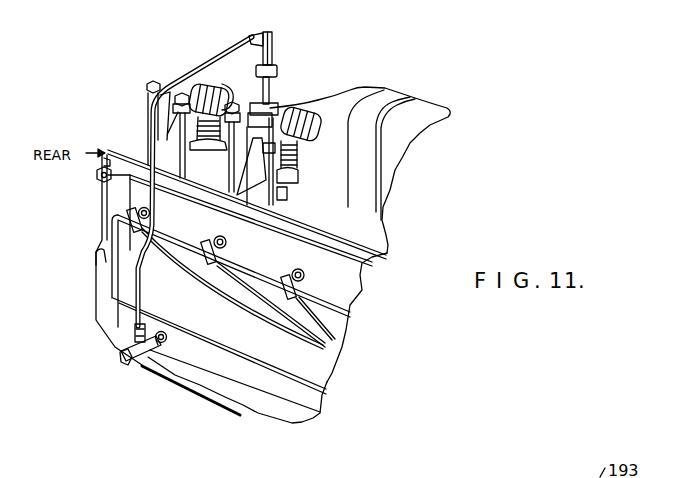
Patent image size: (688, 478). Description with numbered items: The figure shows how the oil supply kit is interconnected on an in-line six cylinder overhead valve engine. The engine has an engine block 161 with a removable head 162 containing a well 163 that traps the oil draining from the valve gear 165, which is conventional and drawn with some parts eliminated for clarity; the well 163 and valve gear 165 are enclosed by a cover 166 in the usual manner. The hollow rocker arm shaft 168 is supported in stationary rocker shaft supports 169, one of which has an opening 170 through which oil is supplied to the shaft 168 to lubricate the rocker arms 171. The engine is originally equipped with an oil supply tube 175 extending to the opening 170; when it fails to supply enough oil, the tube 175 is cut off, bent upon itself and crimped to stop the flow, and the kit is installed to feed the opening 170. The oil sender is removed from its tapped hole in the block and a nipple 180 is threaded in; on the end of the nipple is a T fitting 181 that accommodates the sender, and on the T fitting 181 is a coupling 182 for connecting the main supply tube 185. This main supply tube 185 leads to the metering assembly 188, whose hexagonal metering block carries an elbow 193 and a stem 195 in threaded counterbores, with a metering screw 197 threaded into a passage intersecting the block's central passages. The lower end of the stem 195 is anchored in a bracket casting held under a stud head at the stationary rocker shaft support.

The engine block 161 is at (320, 367).
The removable head 162 is at (349, 291).
The well 163 is at (205, 175).
The valve gear 165 is at (312, 97).
The cover 166 is at (427, 113).
The hollow rocker arm shaft 168 is at (316, 123).
The stationary rocker shaft supports 169 is at (236, 160).
The opening 170 is at (272, 103).
The rocker arms 171 is at (222, 84).
The oil supply tube 175 is at (289, 196).
The nipple 180 is at (166, 343).
The T fitting 181 is at (142, 364).
The coupling 182 is at (133, 340).
The main supply tube 185 is at (212, 65).
The assembly 188 is at (280, 42).
The elbow 193 is at (263, 34).
The stem 195 is at (272, 92).
The metering screw 197 is at (277, 59).